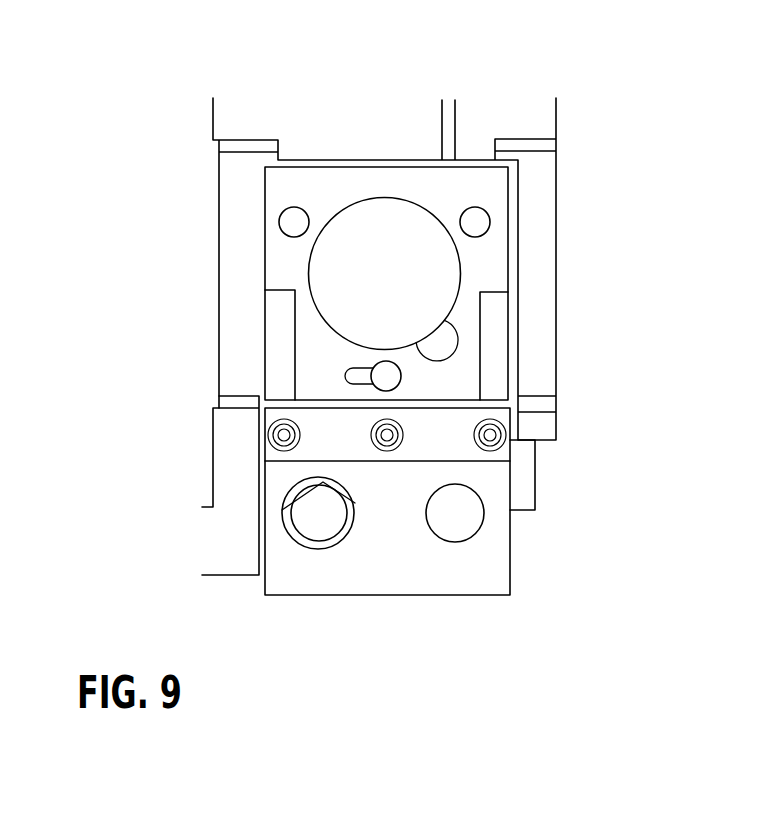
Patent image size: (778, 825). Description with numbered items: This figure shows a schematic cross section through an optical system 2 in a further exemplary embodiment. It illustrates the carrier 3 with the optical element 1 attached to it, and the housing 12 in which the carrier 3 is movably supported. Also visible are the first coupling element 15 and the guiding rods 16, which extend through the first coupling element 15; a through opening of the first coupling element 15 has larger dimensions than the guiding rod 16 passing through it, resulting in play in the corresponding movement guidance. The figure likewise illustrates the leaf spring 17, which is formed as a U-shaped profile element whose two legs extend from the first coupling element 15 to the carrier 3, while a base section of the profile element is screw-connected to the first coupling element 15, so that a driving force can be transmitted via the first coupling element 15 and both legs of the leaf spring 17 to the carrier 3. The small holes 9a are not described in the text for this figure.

The optical element 1 is at (420, 297).
The optical system 2 is at (167, 548).
The carrier 3 is at (365, 185).
The holes 9a is at (284, 222).
The housing 12 is at (485, 123).
The first coupling element 15 is at (403, 560).
The guiding rods 16 is at (320, 525).
The leaf spring 17 is at (278, 355).